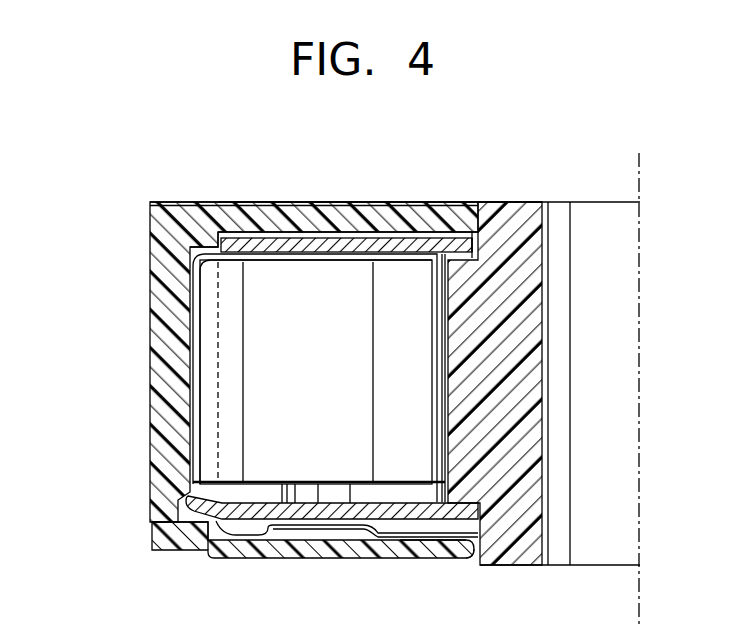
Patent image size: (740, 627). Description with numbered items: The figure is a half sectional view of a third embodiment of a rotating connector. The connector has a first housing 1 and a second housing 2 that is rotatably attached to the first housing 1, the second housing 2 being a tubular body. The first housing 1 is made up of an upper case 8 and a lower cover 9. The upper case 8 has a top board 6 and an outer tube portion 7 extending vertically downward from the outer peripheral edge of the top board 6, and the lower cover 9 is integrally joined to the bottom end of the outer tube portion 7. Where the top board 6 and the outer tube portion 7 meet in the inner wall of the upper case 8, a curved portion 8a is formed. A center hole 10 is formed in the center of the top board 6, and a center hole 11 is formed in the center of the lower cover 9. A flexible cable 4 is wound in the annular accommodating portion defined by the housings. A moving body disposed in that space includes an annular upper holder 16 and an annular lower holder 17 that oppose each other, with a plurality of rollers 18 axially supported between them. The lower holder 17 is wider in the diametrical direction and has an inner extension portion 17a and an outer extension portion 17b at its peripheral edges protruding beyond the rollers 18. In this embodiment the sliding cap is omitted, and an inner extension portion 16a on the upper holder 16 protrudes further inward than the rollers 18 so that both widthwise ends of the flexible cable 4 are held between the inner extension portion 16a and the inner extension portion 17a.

The first housing 1 is at (246, 507).
The second housing 2 is at (525, 268).
The flexible cable 4 is at (193, 430).
The top board 6 is at (348, 218).
The outer tube portion 7 is at (158, 392).
The upper case 8 is at (150, 480).
The curved portion 8a is at (237, 234).
The lower cover 9 is at (165, 532).
The center hole 10 is at (497, 212).
The center hole 11 is at (473, 558).
The upper holder 16 is at (288, 244).
The inner extension portion 16a is at (460, 247).
The lower holder 17 is at (290, 503).
The inner extension portion 17a is at (420, 512).
The outer extension portion 17b is at (192, 500).
The rollers 18 is at (223, 323).